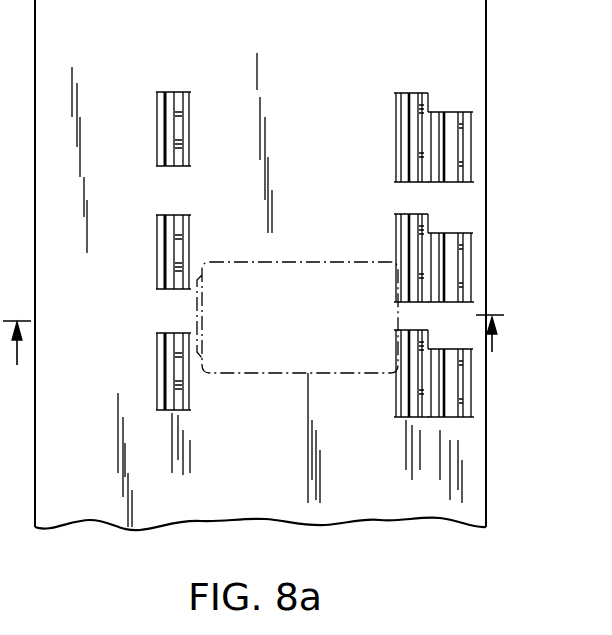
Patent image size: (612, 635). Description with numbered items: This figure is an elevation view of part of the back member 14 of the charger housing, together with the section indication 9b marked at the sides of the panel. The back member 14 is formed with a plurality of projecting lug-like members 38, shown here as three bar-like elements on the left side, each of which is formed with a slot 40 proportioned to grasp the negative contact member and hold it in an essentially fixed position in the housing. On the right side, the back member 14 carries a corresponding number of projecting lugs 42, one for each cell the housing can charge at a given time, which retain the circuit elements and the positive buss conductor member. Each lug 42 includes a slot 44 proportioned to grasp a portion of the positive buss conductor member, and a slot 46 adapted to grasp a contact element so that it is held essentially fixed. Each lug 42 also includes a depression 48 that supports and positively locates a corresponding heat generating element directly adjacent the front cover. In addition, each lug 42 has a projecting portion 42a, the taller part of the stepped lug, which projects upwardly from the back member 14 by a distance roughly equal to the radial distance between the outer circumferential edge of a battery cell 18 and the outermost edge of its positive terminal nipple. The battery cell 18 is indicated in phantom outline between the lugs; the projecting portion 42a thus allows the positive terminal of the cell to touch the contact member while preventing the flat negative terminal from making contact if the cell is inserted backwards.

The back member 14 is at (313, 54).
The battery cell 18 is at (292, 272).
The projecting lug-like member 38 is at (190, 128).
The slot 40 is at (172, 100).
The projecting lug 42 is at (433, 265).
The projecting portion 42a is at (396, 128).
The slot 44 is at (460, 136).
The slot 46 is at (414, 97).
The depression 48 is at (441, 118).
The section line 9b is at (257, 359).